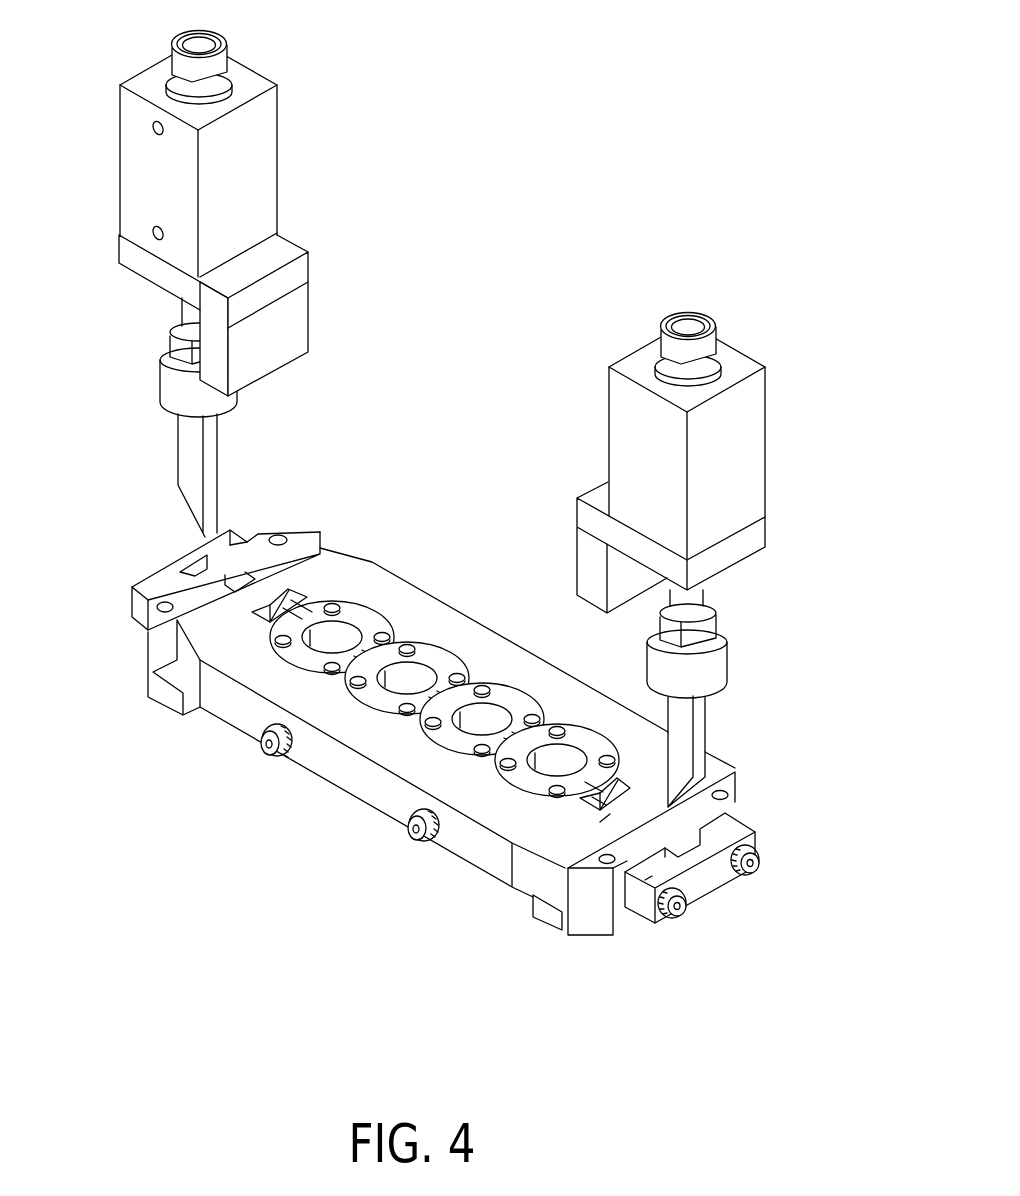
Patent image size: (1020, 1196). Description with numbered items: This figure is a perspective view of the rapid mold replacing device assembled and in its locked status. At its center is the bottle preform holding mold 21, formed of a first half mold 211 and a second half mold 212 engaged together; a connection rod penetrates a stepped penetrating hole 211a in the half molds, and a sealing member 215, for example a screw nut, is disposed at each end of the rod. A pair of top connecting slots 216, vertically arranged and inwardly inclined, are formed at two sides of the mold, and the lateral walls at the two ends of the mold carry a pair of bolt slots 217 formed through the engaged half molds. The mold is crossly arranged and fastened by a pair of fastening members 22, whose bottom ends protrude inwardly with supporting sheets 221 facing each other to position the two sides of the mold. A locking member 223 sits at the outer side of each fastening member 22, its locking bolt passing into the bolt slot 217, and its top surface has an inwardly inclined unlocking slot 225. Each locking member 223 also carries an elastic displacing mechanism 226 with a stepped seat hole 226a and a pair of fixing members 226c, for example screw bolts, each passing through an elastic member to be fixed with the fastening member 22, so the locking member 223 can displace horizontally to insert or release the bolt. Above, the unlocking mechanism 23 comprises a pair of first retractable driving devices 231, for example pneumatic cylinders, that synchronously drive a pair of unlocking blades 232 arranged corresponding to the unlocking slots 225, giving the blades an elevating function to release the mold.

The bottle preform holding mold 21 is at (447, 561).
The first half mold 211 is at (487, 853).
The stepped penetrating hole 211a is at (285, 758).
The second half mold 212 is at (500, 655).
The sealing member 215 is at (262, 752).
The top connecting slots 216 is at (288, 590).
The bolt slots 217 is at (152, 612).
The fastening members 22 is at (305, 528).
The supporting sheets 221 is at (162, 688).
The locking member 223 is at (230, 528).
The unlocking slot 225 is at (190, 556).
The elastic displacing mechanism 226 is at (757, 1022).
The stepped seat hole 226a is at (740, 880).
The fixing members 226c is at (663, 920).
The unlocking mechanism 23 is at (293, 45).
The first retractable driving device 231 is at (262, 162).
The unlocking blades 232 is at (187, 448).